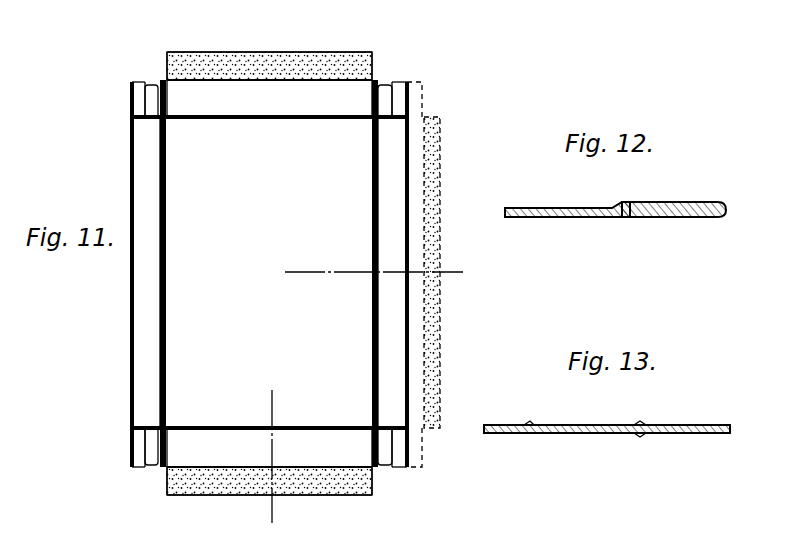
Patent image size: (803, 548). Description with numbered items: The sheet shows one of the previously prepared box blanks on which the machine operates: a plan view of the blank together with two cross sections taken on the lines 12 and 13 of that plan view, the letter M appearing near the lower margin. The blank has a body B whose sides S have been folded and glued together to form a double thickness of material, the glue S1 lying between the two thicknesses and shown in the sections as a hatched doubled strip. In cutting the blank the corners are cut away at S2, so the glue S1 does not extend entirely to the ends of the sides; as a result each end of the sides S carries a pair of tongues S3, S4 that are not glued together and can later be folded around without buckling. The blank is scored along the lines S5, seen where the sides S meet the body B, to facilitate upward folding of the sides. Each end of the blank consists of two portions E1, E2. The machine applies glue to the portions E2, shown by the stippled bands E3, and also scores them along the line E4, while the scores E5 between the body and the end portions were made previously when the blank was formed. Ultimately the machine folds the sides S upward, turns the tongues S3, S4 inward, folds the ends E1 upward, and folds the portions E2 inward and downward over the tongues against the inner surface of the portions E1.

In FIG. 11, the body B is at (269, 273).
In FIG. 12, the body B is at (570, 218).
In FIG. 13, the body B is at (507, 424).
In FIG. 11, the end portion E1 is at (333, 103).
In FIG. 13, the end portion E1 is at (600, 434).
In FIG. 11, the end portion E2 is at (180, 64).
In FIG. 13, the end portion E2 is at (720, 434).
In FIG. 11, the glue E3 is at (255, 78).
In FIG. 11, the score line E4 is at (256, 82).
In FIG. 13, the score line E4 is at (642, 436).
In FIG. 11, the scores E5 is at (294, 120).
In FIG. 13, the scores E5 is at (528, 434).
In FIG. 11, the sides S is at (132, 294).
In FIG. 12, the sides S is at (697, 218).
In FIG. 11, the glue S1 is at (448, 272).
In FIG. 11, the cut-away corner S2 is at (428, 110).
In FIG. 11, the tongue S3 is at (138, 101).
In FIG. 11, the tongue S4 is at (150, 85).
In FIG. 11, the score lines S5 is at (168, 345).
In FIG. 12, the score lines S5 is at (624, 203).
In FIG. 11, the section line 12- 12 is at (373, 270).
In FIG. 11, the section line 13- 13 is at (273, 455).
In FIG. 11, the margin M is at (396, 535).